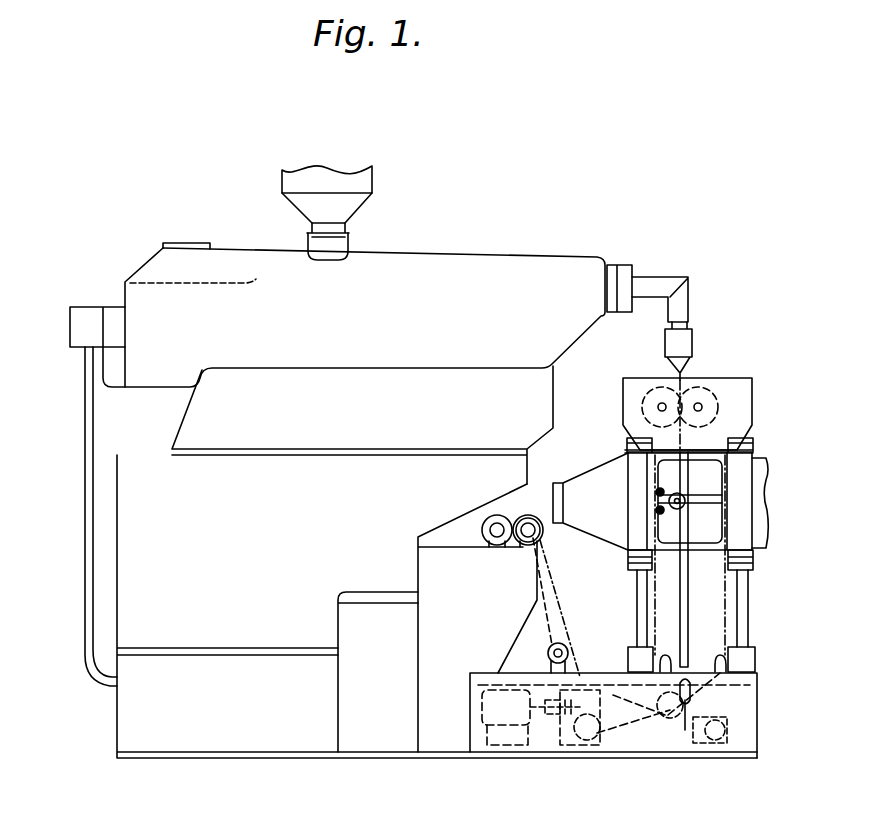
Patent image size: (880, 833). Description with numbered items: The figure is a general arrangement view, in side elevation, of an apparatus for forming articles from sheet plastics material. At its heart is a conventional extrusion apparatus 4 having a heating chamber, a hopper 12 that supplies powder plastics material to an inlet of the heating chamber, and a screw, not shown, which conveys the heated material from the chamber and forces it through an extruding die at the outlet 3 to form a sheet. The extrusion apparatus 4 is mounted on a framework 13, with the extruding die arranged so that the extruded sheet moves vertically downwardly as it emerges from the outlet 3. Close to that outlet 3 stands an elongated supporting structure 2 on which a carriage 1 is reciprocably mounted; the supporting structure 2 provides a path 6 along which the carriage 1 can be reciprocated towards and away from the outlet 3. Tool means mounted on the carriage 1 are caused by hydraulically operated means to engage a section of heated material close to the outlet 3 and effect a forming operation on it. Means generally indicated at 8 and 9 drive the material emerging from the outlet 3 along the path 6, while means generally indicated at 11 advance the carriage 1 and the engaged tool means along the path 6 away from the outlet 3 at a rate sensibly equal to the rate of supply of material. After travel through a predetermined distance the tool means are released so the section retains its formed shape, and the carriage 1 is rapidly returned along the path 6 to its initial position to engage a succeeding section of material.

The carriage 1 is at (596, 516).
The elongated supporting structure 2 is at (711, 605).
The outlet 3 is at (683, 378).
The extrusion apparatus 4 is at (418, 326).
The path 6 is at (680, 588).
The driving means 8 is at (682, 407).
The driving means 9 is at (668, 715).
The carriage advancing means 11 is at (653, 502).
The hopper 12 is at (357, 183).
The framework 13 is at (230, 568).